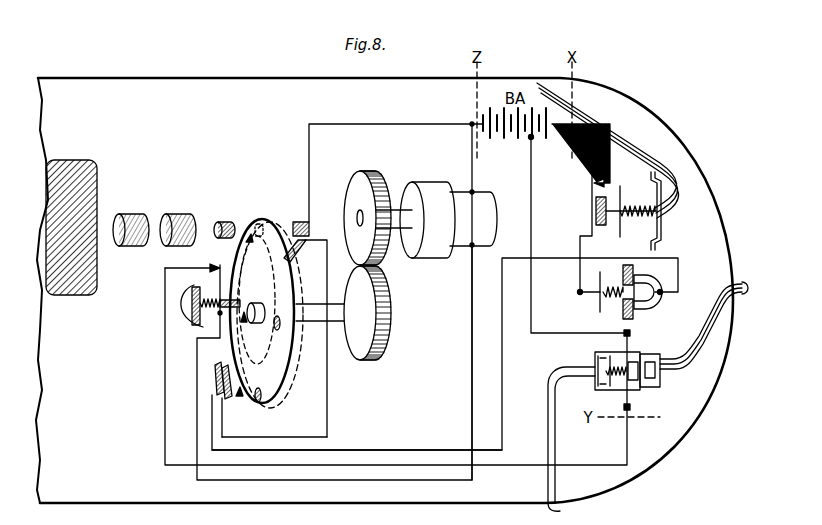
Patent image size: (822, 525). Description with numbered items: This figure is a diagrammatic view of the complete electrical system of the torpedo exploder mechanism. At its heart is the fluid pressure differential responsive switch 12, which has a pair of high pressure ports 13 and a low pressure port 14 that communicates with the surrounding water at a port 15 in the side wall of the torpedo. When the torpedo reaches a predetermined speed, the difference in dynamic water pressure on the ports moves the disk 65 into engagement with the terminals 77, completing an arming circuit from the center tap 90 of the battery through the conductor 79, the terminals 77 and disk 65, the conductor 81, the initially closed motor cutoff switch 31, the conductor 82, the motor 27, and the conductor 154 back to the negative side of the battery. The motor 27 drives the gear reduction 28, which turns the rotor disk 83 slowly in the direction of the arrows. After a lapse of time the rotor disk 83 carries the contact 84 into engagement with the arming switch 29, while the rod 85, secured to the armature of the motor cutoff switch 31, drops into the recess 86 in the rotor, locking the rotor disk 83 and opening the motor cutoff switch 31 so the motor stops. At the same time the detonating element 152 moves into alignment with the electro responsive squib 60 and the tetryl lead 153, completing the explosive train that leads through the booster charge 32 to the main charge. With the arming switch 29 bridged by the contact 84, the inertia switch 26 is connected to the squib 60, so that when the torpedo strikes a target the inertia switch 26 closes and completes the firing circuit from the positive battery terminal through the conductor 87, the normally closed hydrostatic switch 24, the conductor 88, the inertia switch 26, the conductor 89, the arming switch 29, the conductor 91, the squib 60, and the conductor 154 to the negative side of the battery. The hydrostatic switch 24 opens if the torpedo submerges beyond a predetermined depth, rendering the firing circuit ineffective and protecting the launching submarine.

The fluid pressure differential responsive switch 12 is at (648, 388).
The high pressure ports 13 is at (651, 226).
The low pressure port 14 is at (594, 370).
The port 15 is at (560, 511).
The hydrostatic switch 24 is at (660, 236).
The inertia switch 26 is at (656, 302).
The motor 27 is at (498, 216).
The gear reduction 28 is at (418, 180).
The arming switch 29 is at (216, 378).
The motor cutoff switch 31 is at (318, 362).
The booster charge 32 is at (98, 172).
The electro responsive squib 60 is at (298, 221).
The disk 65 is at (638, 356).
The terminals 77 is at (622, 360).
The conductor 79 is at (532, 190).
The conductor 81 is at (610, 465).
The conductor 82 is at (471, 316).
The rotor disk 83 is at (266, 313).
The contact 84 is at (304, 248).
The rod 85 is at (236, 301).
The recess 86 is at (277, 316).
The conductor 87 is at (609, 156).
The conductor 88 is at (579, 273).
The conductor 89 is at (533, 250).
The center tap 90 is at (530, 139).
The conductor 91 is at (264, 437).
The detonating element 152 is at (262, 394).
The tetryl lead 153 is at (226, 224).
The conductor 154 is at (308, 145).